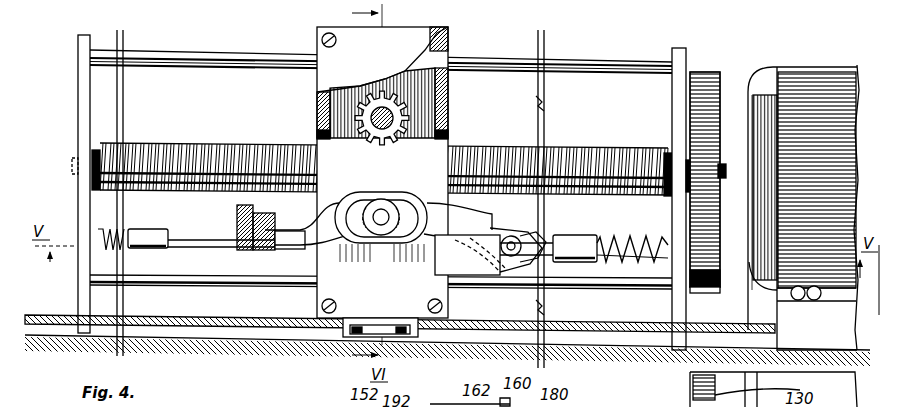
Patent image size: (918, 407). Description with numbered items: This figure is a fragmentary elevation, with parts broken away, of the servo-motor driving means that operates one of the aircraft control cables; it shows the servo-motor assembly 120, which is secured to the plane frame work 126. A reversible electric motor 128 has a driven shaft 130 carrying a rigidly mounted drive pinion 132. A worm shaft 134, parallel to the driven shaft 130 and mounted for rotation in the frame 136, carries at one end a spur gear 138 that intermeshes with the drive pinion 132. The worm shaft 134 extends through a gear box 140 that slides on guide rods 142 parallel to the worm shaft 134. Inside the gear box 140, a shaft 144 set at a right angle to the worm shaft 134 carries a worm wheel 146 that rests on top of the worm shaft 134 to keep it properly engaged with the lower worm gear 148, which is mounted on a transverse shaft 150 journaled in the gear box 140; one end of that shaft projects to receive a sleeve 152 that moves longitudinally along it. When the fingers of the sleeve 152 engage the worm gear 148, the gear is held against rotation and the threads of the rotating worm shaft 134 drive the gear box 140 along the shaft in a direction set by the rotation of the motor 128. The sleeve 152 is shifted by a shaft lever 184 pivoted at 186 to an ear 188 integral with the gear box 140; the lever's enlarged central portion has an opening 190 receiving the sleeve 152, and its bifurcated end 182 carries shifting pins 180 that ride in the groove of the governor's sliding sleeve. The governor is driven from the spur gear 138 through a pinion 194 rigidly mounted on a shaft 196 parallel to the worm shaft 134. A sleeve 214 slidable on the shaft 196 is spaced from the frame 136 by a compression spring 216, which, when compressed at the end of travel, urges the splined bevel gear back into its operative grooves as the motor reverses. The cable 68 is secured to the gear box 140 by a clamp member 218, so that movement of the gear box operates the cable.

The cable 68 is at (256, 320).
The servo-motor assembly 120 is at (711, 36).
The plane frame work 126 is at (592, 346).
The reversible electric motor 128 is at (818, 78).
The driven shaft 130 is at (722, 166).
The drive pinion 132 is at (727, 187).
The worm shaft 134 is at (608, 150).
The frame 136 is at (79, 81).
The spur gear 138 is at (694, 78).
The gear box 140 is at (398, 165).
The guide rods 142 is at (547, 62).
The shaft 144 is at (394, 125).
The worm wheel 146 is at (398, 113).
The worm gear 148 is at (350, 203).
The transverse shaft 150 is at (376, 237).
The sleeve 152 is at (395, 247).
The shifting pins 180 is at (538, 212).
The bifurcated end 182 is at (494, 237).
The shaft lever 184 is at (428, 196).
The pivot 186 is at (242, 248).
The ear 188 is at (279, 241).
The opening 190 is at (350, 243).
The pinion 194 is at (714, 285).
The shaft 196 is at (210, 238).
The sleeve 214 is at (585, 248).
The compression spring 216 is at (634, 247).
The clamp member 218 is at (346, 338).